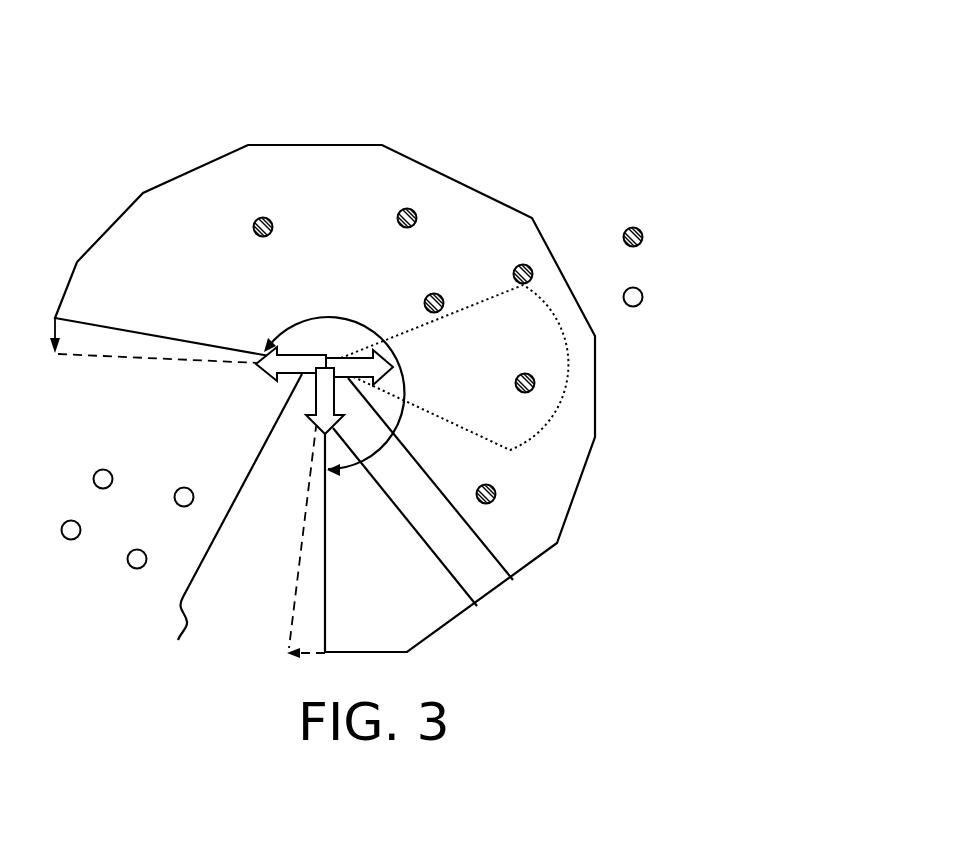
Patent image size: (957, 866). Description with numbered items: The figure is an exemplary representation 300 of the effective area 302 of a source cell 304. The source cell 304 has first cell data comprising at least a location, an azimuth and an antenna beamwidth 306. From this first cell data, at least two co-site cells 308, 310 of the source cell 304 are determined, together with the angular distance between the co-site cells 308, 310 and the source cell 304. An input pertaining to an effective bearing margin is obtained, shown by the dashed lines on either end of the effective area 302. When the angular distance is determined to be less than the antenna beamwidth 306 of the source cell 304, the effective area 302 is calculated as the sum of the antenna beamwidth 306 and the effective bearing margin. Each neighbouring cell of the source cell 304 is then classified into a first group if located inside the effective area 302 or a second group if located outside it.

The exemplary representation 300 is at (684, 92).
The effective area 302 is at (590, 453).
The source cell 304 is at (513, 580).
The antenna beamwidth 306 is at (510, 450).
The co-site cell 308 is at (477, 606).
The co-site cell 310 is at (218, 528).